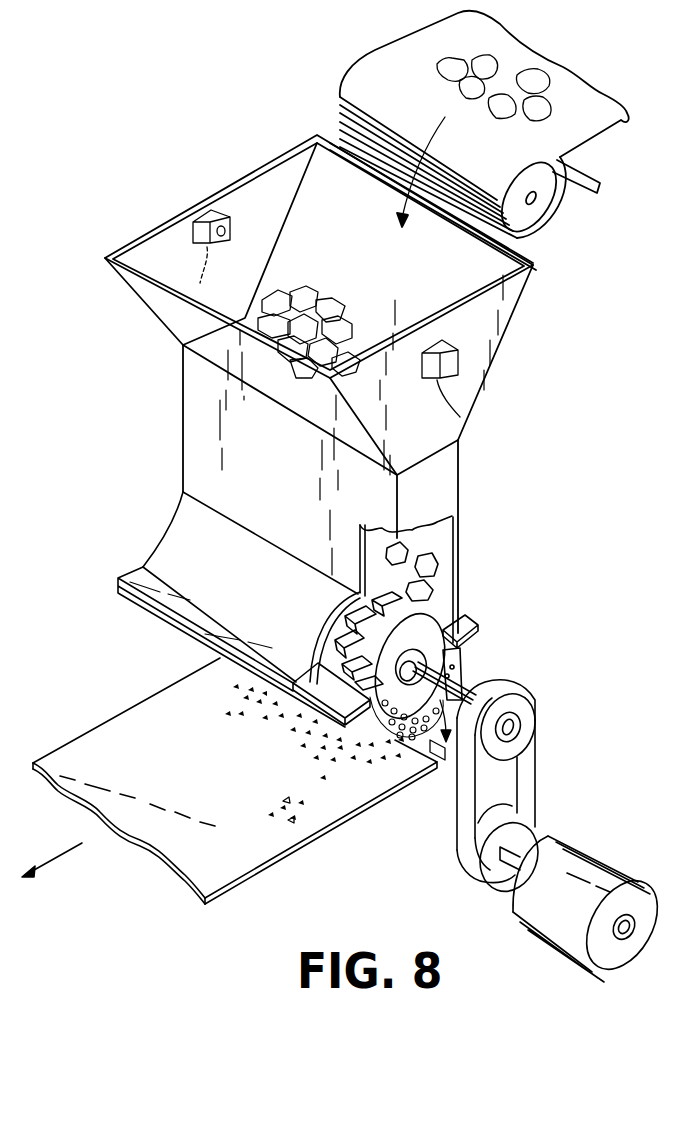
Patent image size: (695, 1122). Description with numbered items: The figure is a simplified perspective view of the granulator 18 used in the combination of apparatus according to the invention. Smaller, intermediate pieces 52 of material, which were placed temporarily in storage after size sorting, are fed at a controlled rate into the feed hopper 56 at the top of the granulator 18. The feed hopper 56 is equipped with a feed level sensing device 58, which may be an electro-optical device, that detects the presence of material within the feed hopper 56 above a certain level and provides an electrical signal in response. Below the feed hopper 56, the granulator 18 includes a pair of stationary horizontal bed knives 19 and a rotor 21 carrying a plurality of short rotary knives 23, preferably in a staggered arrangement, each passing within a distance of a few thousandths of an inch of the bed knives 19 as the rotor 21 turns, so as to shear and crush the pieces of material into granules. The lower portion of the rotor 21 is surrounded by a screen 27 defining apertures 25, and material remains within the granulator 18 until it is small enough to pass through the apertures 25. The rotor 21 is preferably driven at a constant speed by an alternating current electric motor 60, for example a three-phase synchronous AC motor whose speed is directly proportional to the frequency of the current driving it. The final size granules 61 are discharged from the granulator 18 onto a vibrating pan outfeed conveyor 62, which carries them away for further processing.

The granulator 18 is at (545, 490).
The bed knives 19 is at (333, 690).
The rotor 21 is at (520, 728).
The rotary knives 23 is at (357, 612).
The apertures 25 is at (444, 748).
The screen 27 is at (465, 664).
The intermediate pieces 52 is at (530, 76).
The feed hopper 56 is at (515, 288).
The feed level sensing device 58 is at (228, 232).
The electric motor 60 is at (633, 870).
The final size granules 61 is at (290, 818).
The outfeed conveyor 62 is at (173, 683).